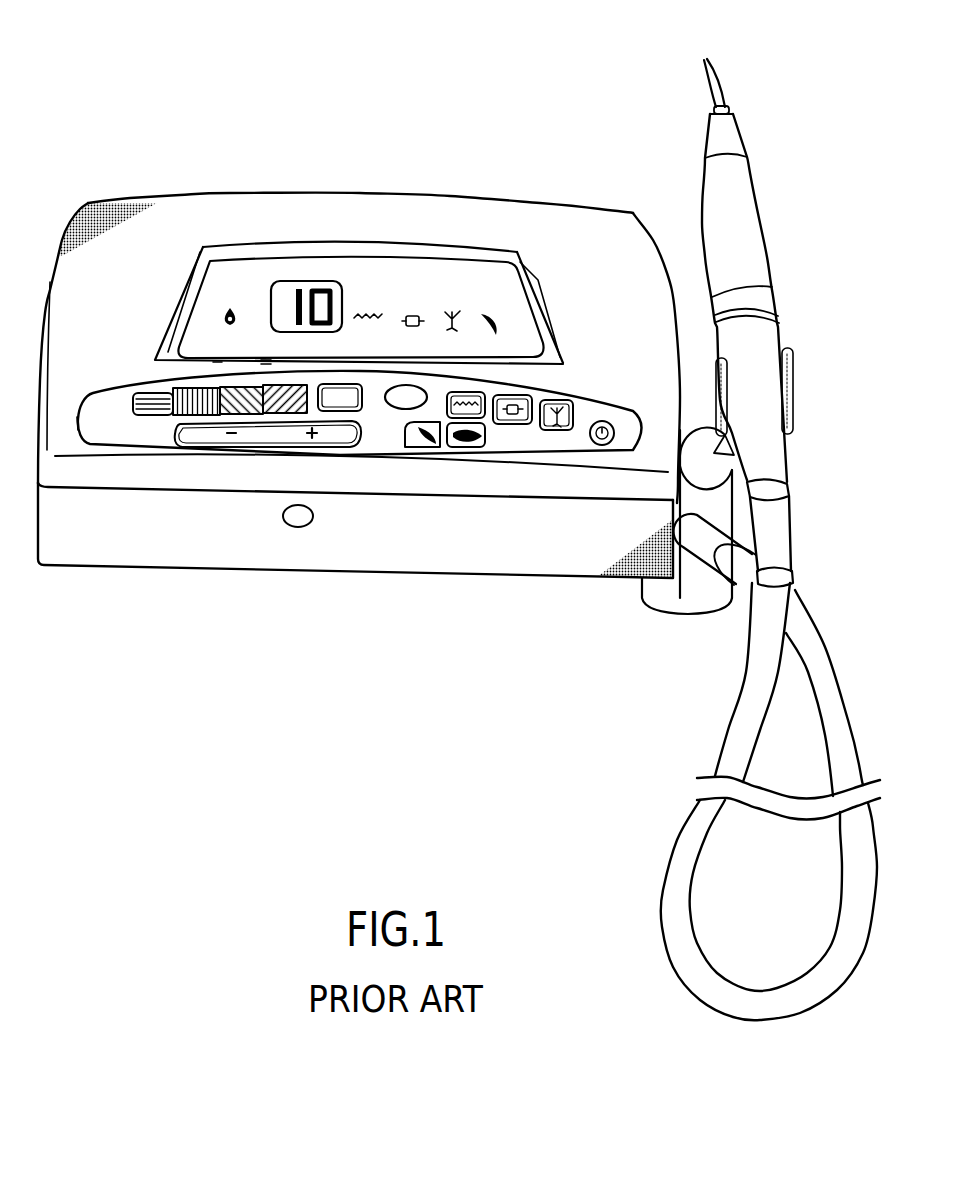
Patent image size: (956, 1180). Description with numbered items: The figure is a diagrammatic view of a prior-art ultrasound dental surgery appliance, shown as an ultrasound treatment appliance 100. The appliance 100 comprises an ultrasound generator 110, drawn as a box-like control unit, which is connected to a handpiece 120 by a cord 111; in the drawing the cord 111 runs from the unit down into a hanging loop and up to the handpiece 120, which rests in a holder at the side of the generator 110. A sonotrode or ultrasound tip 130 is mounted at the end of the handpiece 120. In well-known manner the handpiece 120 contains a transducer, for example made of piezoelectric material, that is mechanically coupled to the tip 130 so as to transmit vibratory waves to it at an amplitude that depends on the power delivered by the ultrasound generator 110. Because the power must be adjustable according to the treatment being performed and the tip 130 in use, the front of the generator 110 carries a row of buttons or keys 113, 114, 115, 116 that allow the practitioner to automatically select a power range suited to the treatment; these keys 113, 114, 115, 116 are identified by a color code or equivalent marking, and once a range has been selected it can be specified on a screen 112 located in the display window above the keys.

The ultrasound treatment appliance 100 is at (153, 96).
The ultrasound generator 110 is at (452, 192).
The cord 111 is at (818, 655).
The screen 112 is at (310, 278).
The key 113 is at (160, 403).
The key 114 is at (205, 397).
The key 115 is at (248, 397).
The key 116 is at (293, 397).
The handpiece 120 is at (748, 223).
The ultrasound tip 130 is at (716, 81).